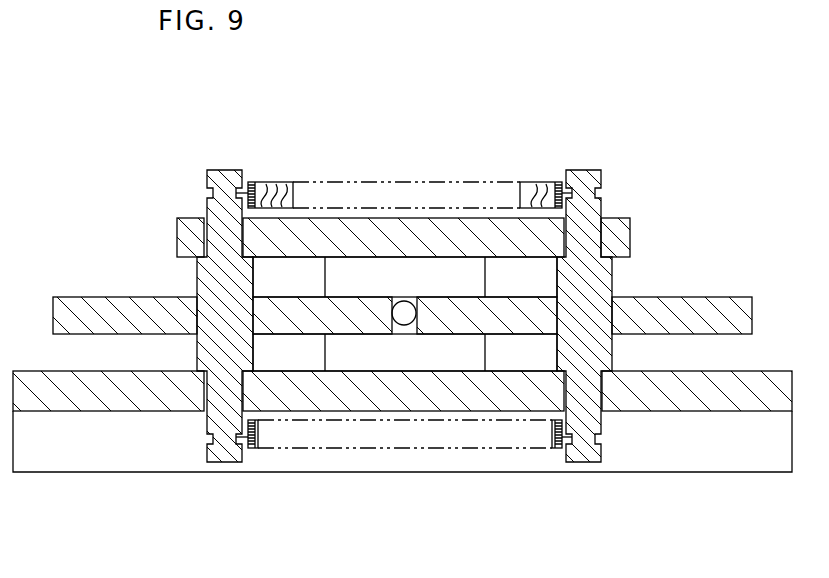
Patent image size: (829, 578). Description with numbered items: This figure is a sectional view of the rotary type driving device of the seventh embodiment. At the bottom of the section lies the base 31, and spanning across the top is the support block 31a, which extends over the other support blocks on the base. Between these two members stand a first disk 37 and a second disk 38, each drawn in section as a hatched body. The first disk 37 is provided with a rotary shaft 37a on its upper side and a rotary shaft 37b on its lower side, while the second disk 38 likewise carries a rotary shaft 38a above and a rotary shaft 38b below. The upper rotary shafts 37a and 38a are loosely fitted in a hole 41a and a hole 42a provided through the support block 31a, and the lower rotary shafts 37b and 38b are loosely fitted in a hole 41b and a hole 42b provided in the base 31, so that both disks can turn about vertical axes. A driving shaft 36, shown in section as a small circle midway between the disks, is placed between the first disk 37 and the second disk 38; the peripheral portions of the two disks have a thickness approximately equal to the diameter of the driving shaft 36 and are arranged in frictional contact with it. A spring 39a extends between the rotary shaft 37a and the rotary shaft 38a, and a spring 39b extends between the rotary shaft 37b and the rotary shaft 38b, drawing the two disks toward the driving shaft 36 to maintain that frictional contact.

The base 31 is at (727, 400).
The support block 31a is at (632, 222).
The driving shaft 36 is at (403, 318).
The first disk 37 is at (78, 297).
The rotary shaft 37a is at (221, 170).
The rotary shaft 37b is at (226, 450).
The second disk 38 is at (722, 300).
The rotary shaft 38a is at (580, 172).
The rotary shaft 38b is at (583, 460).
The spring 39a is at (503, 190).
The spring 39b is at (538, 441).
The hole 41a is at (204, 220).
The hole 41b is at (204, 411).
The hole 42a is at (603, 216).
The hole 42b is at (602, 412).